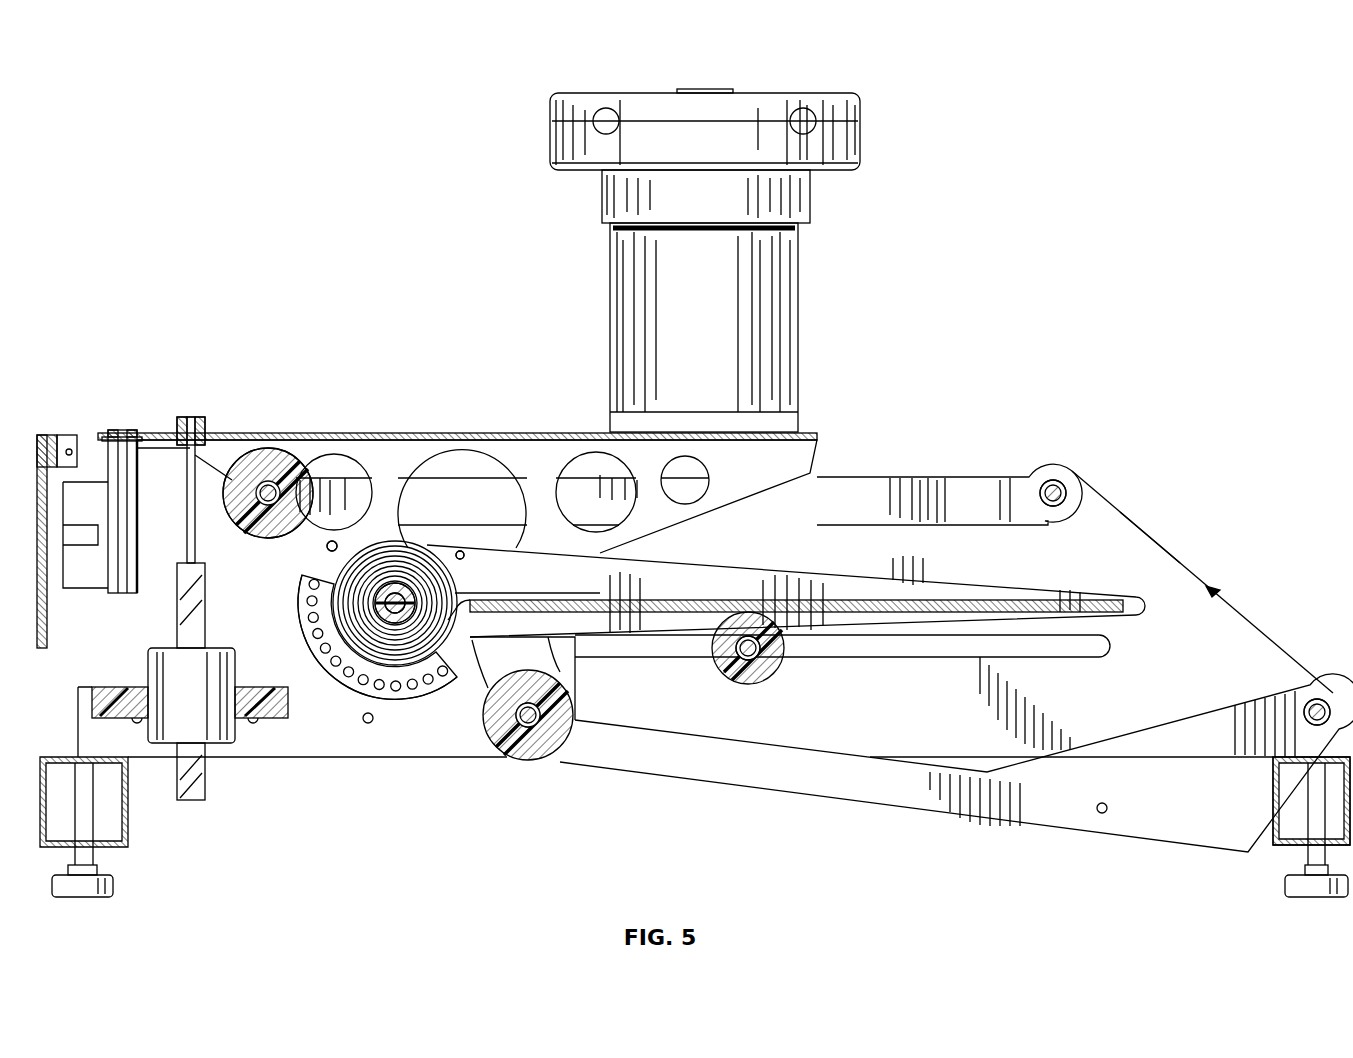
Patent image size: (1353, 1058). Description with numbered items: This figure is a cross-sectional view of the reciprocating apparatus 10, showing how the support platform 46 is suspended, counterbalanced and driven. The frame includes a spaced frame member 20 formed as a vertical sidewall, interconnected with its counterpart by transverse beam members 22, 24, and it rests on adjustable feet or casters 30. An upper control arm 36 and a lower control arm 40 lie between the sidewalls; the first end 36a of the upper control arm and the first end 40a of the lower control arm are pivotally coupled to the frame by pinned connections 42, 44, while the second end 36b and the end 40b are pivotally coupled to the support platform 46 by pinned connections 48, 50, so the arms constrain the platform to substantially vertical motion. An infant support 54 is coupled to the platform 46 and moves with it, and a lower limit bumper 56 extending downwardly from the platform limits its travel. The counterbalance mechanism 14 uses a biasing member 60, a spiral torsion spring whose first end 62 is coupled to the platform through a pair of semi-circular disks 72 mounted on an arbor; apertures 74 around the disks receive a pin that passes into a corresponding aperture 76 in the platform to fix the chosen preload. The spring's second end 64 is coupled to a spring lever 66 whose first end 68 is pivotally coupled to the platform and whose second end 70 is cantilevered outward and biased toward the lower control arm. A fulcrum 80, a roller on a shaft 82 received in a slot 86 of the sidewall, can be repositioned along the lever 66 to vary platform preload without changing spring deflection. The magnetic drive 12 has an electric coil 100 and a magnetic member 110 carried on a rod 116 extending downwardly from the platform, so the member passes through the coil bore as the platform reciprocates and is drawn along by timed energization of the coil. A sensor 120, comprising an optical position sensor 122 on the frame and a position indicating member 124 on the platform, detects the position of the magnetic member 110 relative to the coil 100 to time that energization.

The apparatus 10 is at (208, 165).
The magnetic drive 12 is at (175, 548).
The counterbalance mechanism 14 is at (582, 650).
The second frame member 20 is at (1213, 590).
The transverse beam member 22 is at (130, 828).
The transverse beam member 24 is at (1272, 790).
The adjustable feet or casters 30 is at (115, 886).
The upper control arm 36 is at (930, 466).
The first end of upper control arm 36a is at (1052, 472).
The second end of upper control arm 36b is at (313, 443).
The lower control arm 40 is at (885, 812).
The first end of lower control arm 40a is at (1270, 698).
The end of lower control arm 40b is at (532, 765).
The pinned connection 42 is at (1068, 484).
The pinned connection 44 is at (1303, 718).
The support platform 46 is at (430, 432).
The pinned connection 48 is at (268, 490).
The pinned connection 50 is at (512, 758).
The infant support 54 is at (875, 135).
The lower limit bumper 56 is at (135, 485).
The biasing member 60 is at (333, 632).
The first end of spiral torsion spring 62 is at (345, 655).
The second end of spiral torsion spring 64 is at (530, 598).
The spring lever 66 is at (722, 586).
The first end of spring lever 68 is at (465, 557).
The second end of spring lever 70 is at (1123, 593).
The semi-circular disks 72 is at (300, 598).
The apertures 74 is at (410, 590).
The aperture 76 is at (325, 548).
The fulcrum 80 is at (770, 672).
The shaft 82 is at (718, 656).
The slot 86 is at (905, 655).
The electric coil 100 is at (148, 672).
The magnetic member 110 is at (175, 625).
The rod 116 is at (192, 470).
The sensor 120 is at (44, 430).
The optical position sensor 122 is at (68, 434).
The position indicating member 124 is at (80, 480).